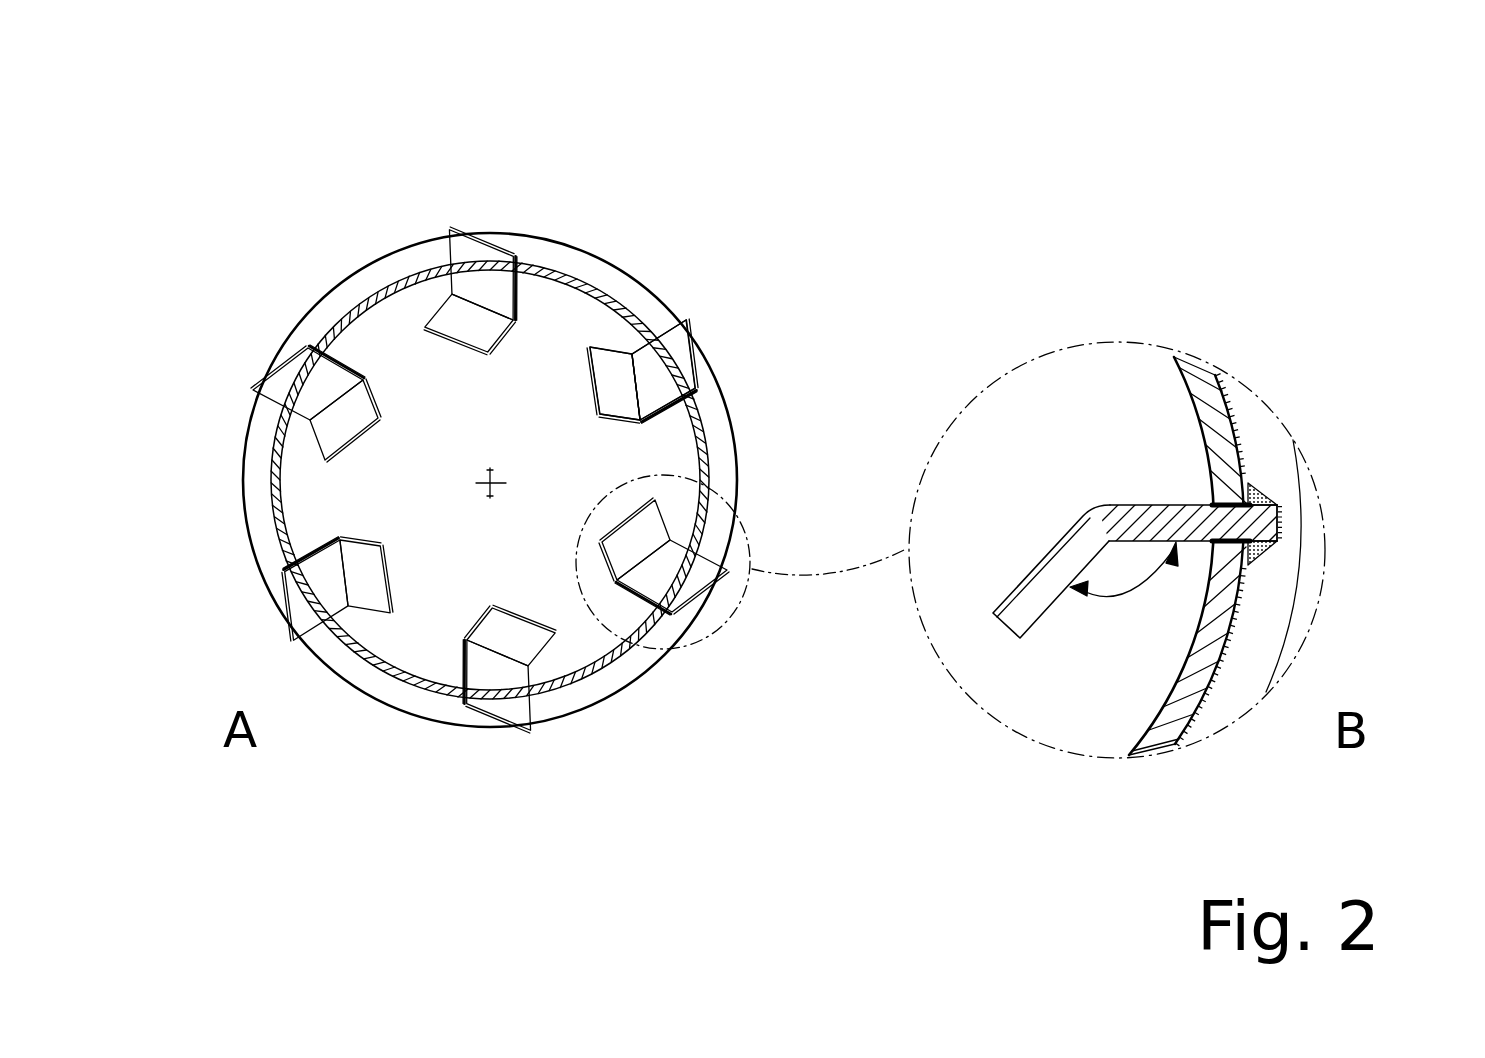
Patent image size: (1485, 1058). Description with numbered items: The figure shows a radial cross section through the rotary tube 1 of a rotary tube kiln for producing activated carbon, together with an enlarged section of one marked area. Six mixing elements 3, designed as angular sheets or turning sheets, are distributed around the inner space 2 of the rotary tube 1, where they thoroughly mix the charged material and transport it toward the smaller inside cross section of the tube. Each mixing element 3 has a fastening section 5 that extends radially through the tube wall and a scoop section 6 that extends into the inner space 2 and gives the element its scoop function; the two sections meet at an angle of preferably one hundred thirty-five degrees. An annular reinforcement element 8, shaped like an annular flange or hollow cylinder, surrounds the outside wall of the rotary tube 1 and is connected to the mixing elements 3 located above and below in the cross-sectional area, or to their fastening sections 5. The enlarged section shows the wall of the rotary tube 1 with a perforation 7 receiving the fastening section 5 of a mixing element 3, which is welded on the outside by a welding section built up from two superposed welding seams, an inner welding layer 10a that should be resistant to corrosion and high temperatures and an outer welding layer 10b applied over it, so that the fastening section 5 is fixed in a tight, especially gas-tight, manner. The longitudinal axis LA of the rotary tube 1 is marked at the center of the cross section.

In FIG. 2A, the rotary tube 1 is at (283, 296).
In FIG. 2A, the inner space 2 is at (290, 503).
In FIG. 2A, the mixing element 3 is at (642, 342).
In FIG. 2B, the mixing element 3 is at (1130, 472).
In FIG. 2A, the fastening section 5 is at (700, 368).
In FIG. 2B, the fastening section 5 is at (1254, 516).
In FIG. 2A, the scoop section 6 is at (646, 423).
In FIG. 2B, the scoop section 6 is at (1062, 557).
In FIG. 2B, the perforation 7 is at (1240, 573).
In FIG. 2A, the reinforcement element 8 is at (590, 278).
In FIG. 2B, the inner welding layer 10a is at (1250, 493).
In FIG. 2B, the outer welding layer 10b is at (1262, 503).
In FIG. 2A, the longitudinal axis LA is at (495, 488).